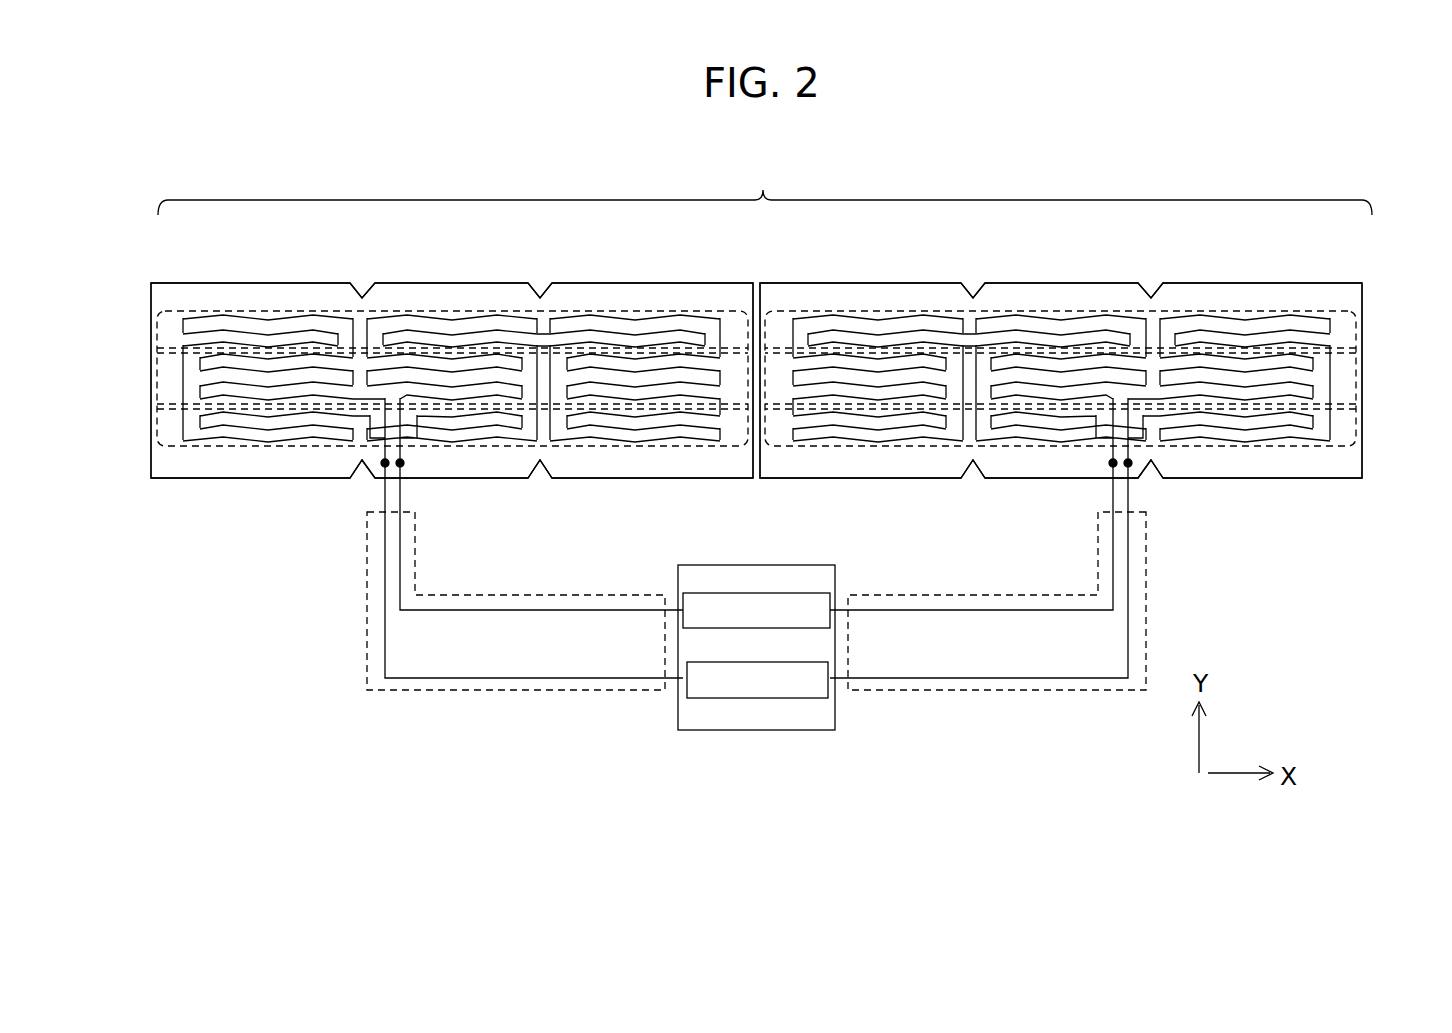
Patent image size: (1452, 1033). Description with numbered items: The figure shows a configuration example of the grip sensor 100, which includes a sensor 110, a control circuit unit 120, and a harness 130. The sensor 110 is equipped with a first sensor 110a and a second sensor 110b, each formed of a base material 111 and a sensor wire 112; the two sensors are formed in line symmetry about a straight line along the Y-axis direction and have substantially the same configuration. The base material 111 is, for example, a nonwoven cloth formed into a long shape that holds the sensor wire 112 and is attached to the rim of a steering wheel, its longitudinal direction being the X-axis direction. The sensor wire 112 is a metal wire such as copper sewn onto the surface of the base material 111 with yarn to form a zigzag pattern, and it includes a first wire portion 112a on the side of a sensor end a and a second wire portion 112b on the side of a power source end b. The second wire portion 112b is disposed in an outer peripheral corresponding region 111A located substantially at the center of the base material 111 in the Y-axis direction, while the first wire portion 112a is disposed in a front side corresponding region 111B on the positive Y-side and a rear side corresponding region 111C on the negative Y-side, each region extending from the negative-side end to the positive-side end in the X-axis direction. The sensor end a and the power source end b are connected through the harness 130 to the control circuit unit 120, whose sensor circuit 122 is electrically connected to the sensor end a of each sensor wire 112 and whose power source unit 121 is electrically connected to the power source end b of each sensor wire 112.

The grip sensor 100 is at (1007, 776).
The sensor 110 is at (756, 362).
The first sensor 110a is at (438, 283).
The second sensor 110b is at (1038, 283).
The base material 111 is at (613, 283).
The outer peripheral corresponding region 111A is at (160, 351).
The front side corresponding region 111B is at (159, 311).
The rear side corresponding region 111C is at (160, 407).
The sensor wire 112 is at (756, 390).
The first wire portion 112a is at (250, 318).
The second wire portion 112b is at (655, 385).
The control circuit unit 120 is at (737, 565).
The power source unit 121 is at (740, 593).
The sensor circuit 122 is at (740, 659).
The harness 130 is at (755, 605).
The sensor end a is at (383, 467).
The power source end b is at (403, 466).